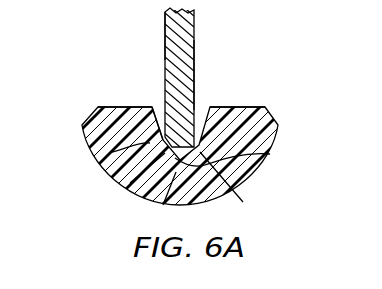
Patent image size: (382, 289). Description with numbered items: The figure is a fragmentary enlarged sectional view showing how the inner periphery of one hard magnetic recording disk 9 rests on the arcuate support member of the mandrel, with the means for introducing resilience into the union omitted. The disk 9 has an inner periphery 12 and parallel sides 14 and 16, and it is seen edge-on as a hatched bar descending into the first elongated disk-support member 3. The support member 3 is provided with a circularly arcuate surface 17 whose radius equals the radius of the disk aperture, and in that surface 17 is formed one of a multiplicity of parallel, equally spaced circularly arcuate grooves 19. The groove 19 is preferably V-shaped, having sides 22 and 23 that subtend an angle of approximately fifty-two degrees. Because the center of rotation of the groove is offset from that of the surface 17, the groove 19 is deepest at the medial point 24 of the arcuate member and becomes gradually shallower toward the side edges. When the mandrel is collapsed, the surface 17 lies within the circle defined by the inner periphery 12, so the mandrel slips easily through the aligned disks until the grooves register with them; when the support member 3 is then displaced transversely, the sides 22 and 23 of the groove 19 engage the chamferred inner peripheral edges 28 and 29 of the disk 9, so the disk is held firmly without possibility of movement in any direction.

The first elongated disk-support member 3 is at (90, 122).
The magnetic recording disk 9 is at (189, 60).
The inner periphery 12 is at (163, 205).
The side 14 is at (165, 33).
The side 16 is at (195, 78).
The circularly arcuate surface 17 is at (110, 106).
The circularly arcuate groove 19 is at (157, 99).
The groove side 22 is at (112, 152).
The groove side 23 is at (208, 107).
The medial point 24 is at (243, 202).
The chamferred inner peripheral edge 28 is at (130, 183).
The chamferred inner peripheral edge 29 is at (270, 154).